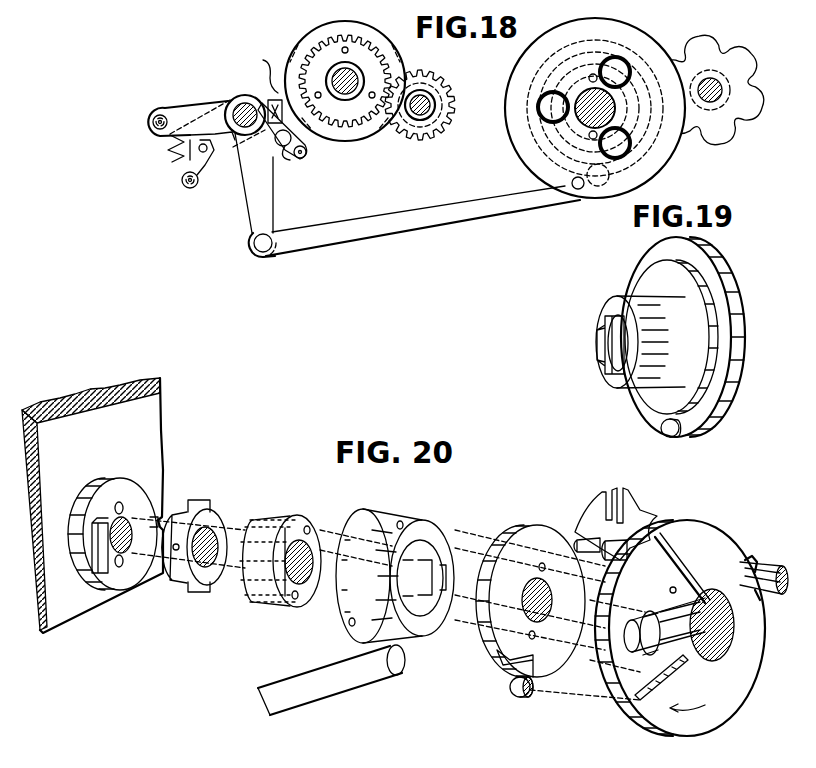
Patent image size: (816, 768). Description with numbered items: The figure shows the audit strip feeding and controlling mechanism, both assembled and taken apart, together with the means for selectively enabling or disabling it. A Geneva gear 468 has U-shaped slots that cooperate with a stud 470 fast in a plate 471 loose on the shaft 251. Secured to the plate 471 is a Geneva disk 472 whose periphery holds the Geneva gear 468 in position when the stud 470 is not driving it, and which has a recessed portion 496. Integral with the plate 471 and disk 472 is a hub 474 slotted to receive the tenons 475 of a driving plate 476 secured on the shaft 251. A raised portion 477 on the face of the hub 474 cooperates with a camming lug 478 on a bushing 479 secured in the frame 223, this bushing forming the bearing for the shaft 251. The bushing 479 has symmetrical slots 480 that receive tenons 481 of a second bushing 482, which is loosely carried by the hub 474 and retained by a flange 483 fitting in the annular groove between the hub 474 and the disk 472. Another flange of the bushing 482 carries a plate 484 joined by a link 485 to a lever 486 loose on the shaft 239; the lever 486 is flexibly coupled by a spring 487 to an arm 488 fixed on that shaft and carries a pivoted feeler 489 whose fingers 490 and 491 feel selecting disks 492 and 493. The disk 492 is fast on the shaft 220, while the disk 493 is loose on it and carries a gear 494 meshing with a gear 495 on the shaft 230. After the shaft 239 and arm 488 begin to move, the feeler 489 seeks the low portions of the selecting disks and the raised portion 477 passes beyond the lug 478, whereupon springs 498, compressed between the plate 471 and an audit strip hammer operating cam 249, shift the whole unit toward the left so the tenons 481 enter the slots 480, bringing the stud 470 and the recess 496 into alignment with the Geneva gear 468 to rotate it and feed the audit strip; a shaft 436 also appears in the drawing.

In FIG. 18, the shaft 220 is at (345, 81).
In FIG. 20, the frame 223 is at (150, 403).
In FIG. 18, the shaft 230 is at (432, 100).
In FIG. 18, the shaft 239 is at (243, 94).
In FIG. 20, the audit strip hammer operating cam 249 is at (742, 540).
In FIG. 18, the shaft 251 is at (585, 118).
In FIG. 20, the shaft 251 is at (133, 520).
In FIG. 18, the shaft 436 is at (722, 90).
In FIG. 20, the shaft 436 is at (750, 558).
In FIG. 18, the Geneva gear 468 is at (694, 40).
In FIG. 20, the Geneva gear 468 is at (590, 520).
In FIG. 18, the stud 470 is at (572, 197).
In FIG. 19, the stud 470 is at (661, 430).
In FIG. 20, the stud 470 is at (518, 698).
In FIG. 18, the plate 471 is at (664, 162).
In FIG. 19, the plate 471 is at (735, 326).
In FIG. 20, the plate 471 is at (612, 712).
In FIG. 19, the Geneva disk 472 is at (688, 296).
In FIG. 20, the Geneva disk 472 is at (530, 535).
In FIG. 19, the hub 474 is at (626, 305).
In FIG. 20, the hub 474 is at (262, 520).
In FIG. 20, the tenons 475 is at (200, 503).
In FIG. 20, the driving plate 476 is at (183, 580).
In FIG. 19, the raised portion 477 is at (605, 380).
In FIG. 20, the raised portion 477 is at (250, 590).
In FIG. 20, the camming lug 478 is at (92, 562).
In FIG. 20, the bushing 479 is at (95, 585).
In FIG. 20, the slots 480 is at (75, 530).
In FIG. 20, the tenons 481 is at (318, 600).
In FIG. 20, the bushing 482 is at (375, 515).
In FIG. 20, the flange 483 is at (445, 560).
In FIG. 20, the plate 484 is at (392, 515).
In FIG. 18, the link 485 is at (403, 203).
In FIG. 20, the link 485 is at (330, 672).
In FIG. 18, the lever 486 is at (262, 204).
In FIG. 18, the spring 487 is at (168, 156).
In FIG. 18, the arm 488 is at (208, 166).
In FIG. 18, the feeler 489 is at (288, 162).
In FIG. 18, the finger 490 is at (310, 154).
In FIG. 18, the finger 491 is at (268, 140).
In FIG. 18, the selecting disk 492 is at (256, 72).
In FIG. 18, the selecting disk 493 is at (308, 38).
In FIG. 18, the gear 494 is at (325, 40).
In FIG. 18, the gear 495 is at (420, 72).
In FIG. 20, the recessed portion 496 is at (500, 668).
In FIG. 20, the springs 498 is at (655, 615).